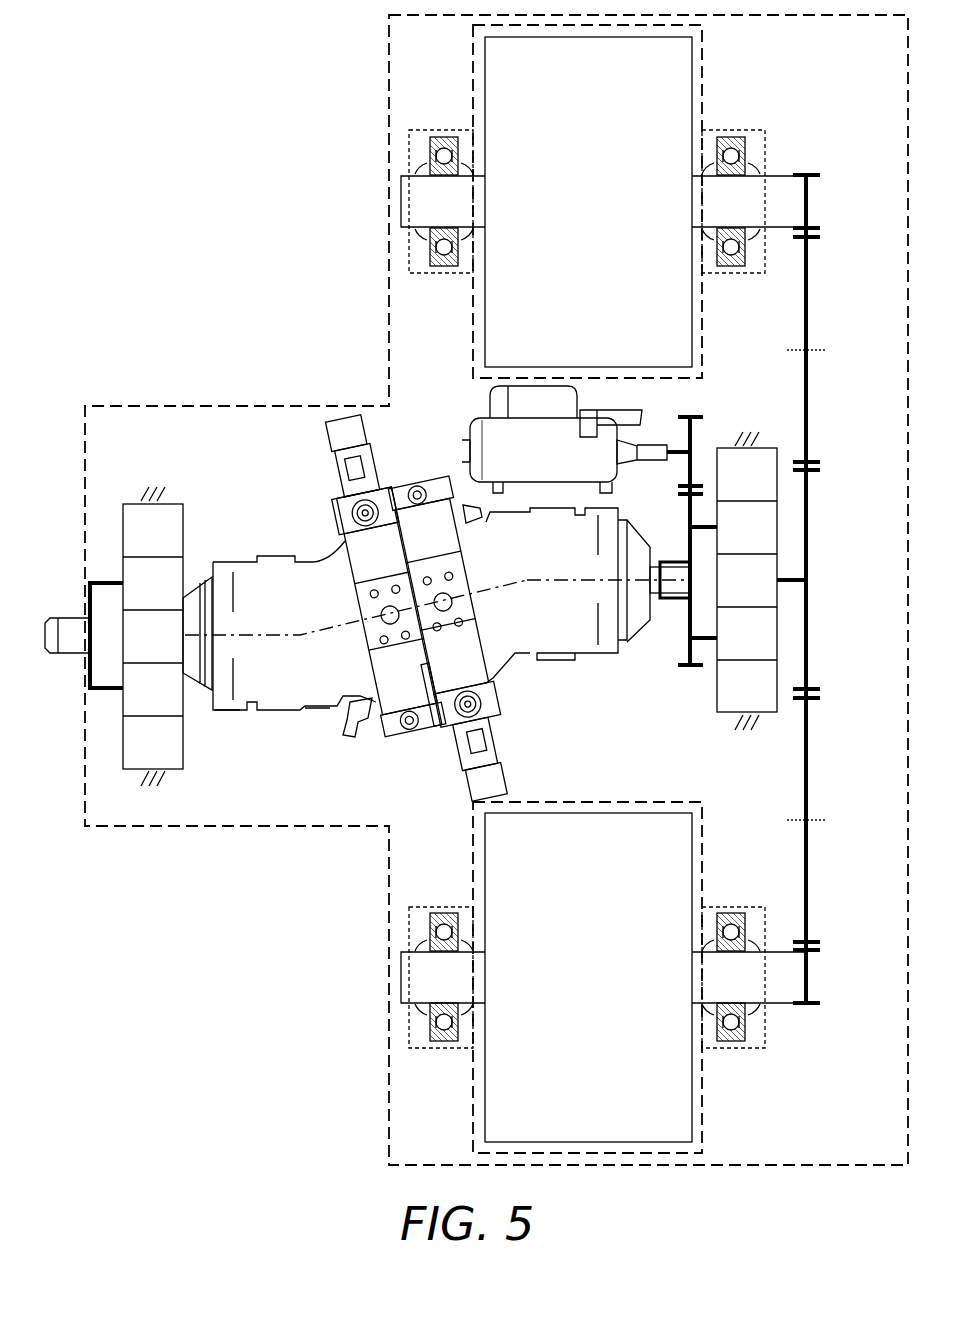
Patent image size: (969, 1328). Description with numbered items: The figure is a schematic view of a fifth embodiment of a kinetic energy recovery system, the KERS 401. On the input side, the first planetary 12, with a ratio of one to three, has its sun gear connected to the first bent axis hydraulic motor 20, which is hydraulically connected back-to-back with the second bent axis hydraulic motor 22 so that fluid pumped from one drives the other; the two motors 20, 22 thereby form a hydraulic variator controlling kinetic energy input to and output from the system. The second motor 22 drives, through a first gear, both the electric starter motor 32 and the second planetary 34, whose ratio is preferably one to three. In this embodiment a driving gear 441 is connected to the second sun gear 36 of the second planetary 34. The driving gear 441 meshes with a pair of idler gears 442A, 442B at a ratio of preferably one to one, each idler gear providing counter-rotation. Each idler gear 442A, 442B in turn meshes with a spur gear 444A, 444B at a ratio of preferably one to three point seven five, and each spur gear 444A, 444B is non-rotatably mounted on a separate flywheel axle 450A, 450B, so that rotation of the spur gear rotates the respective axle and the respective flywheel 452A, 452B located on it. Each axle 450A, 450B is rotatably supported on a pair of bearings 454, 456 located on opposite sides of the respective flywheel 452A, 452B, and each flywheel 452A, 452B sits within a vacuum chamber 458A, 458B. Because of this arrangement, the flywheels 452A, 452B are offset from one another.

The first planetary gear 12 is at (100, 522).
The first bent axis hydraulic motor 20 is at (302, 730).
The second bent axis hydraulic motor 22 is at (583, 674).
The electric starter motor 32 is at (470, 430).
The second planetary gear 34 is at (750, 744).
The second sun gear 36 is at (777, 568).
The KERS 401 is at (322, 348).
The driving gear 441 is at (808, 617).
The idler gear 442A is at (808, 884).
The idler gear 442B is at (808, 303).
The spur gear 444A is at (808, 978).
The spur gear 444B is at (808, 203).
The flywheel axle 450A is at (400, 966).
The flywheel axle 450B is at (777, 186).
The flywheel 452A is at (497, 1126).
The flywheel 452B is at (497, 78).
The bearing 454 is at (447, 1030).
The bearing 456 is at (446, 254).
The vacuum chamber 458A is at (703, 1145).
The vacuum chamber 458B is at (703, 45).